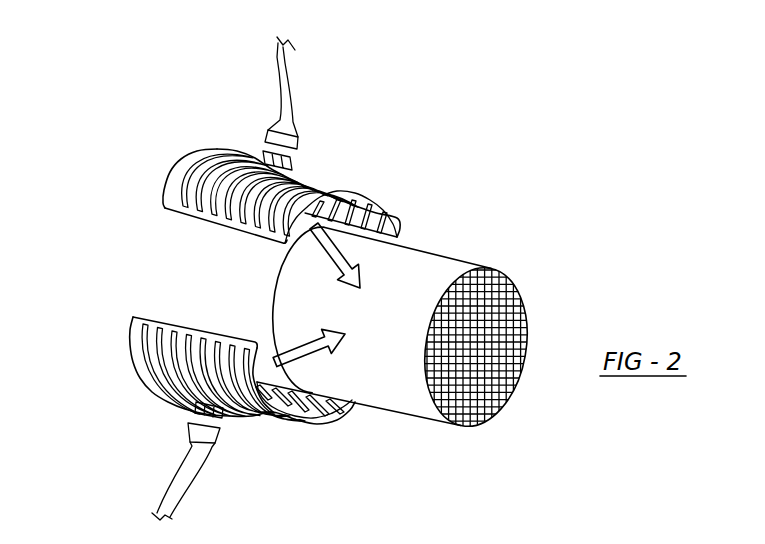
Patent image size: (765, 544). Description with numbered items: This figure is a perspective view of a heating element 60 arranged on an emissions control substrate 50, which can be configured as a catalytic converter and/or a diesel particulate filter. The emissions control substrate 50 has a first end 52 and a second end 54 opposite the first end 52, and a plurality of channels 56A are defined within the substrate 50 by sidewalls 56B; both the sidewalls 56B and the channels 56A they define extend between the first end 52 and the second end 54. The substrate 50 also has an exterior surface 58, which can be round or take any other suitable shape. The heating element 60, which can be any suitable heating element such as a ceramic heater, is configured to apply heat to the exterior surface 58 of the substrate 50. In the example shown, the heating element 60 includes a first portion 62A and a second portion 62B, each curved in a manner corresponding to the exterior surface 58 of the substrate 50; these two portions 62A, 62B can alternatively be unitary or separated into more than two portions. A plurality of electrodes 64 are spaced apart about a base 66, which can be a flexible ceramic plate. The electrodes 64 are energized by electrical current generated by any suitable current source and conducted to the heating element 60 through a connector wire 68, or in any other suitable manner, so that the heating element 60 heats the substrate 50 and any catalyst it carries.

The emissions control substrate 50 is at (433, 300).
The first end 52 is at (511, 361).
The second end 54 is at (274, 294).
The channels 56A is at (489, 367).
The sidewalls 56B is at (490, 374).
The exterior surface 58 is at (442, 274).
The heating element 60 is at (146, 130).
The first portion 62A is at (192, 152).
The second portion 62B is at (131, 343).
The electrodes 64 is at (179, 196).
The base 66 is at (166, 186).
The connector wire 68 is at (289, 82).